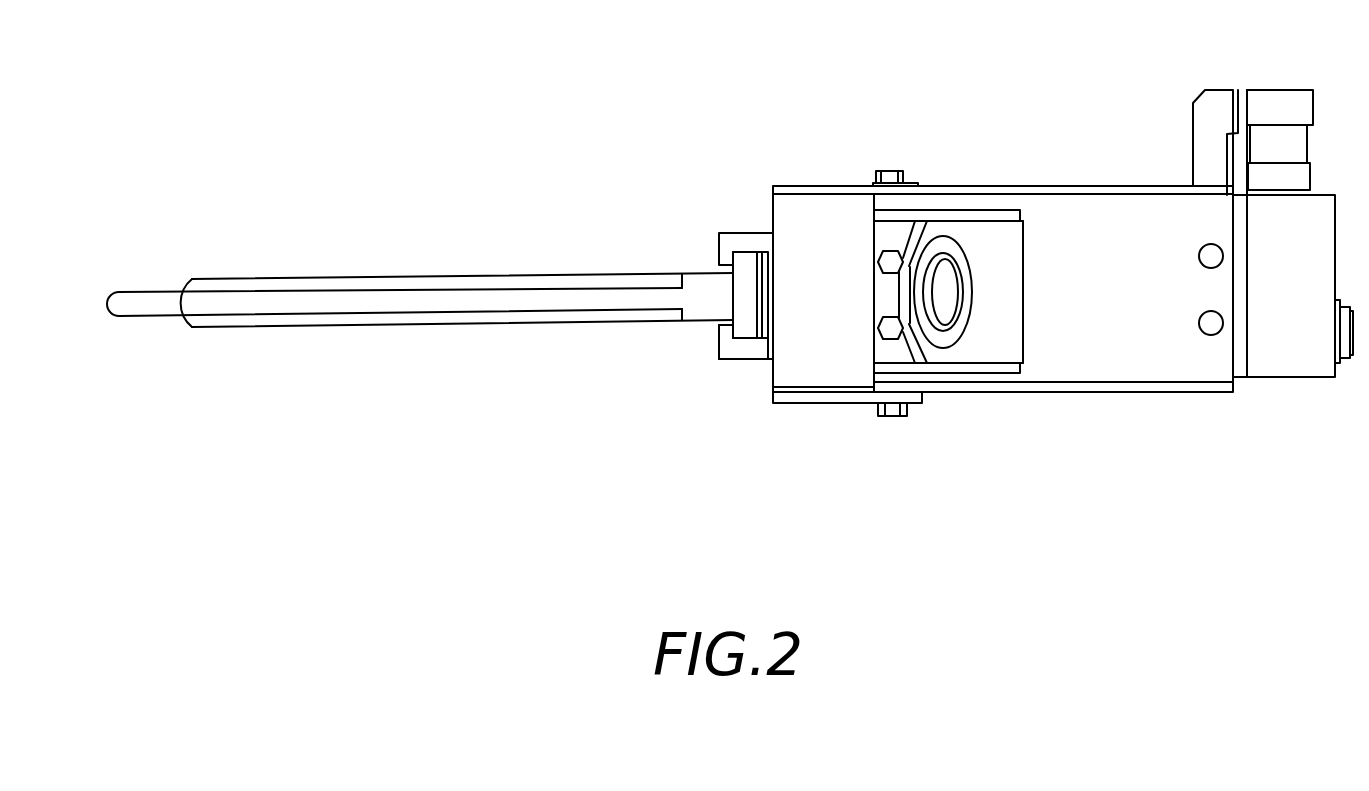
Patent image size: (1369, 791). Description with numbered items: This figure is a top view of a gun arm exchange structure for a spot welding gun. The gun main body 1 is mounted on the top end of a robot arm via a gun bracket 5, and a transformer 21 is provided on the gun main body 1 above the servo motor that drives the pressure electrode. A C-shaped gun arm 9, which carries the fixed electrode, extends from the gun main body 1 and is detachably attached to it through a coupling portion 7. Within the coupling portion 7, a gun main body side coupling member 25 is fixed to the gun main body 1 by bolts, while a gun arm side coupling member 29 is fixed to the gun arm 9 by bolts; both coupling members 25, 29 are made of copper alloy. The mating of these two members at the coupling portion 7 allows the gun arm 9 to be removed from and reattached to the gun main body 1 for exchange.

The gun main body 1 is at (1110, 187).
The gun bracket 5 is at (987, 350).
The coupling portion 7 is at (733, 231).
The gun arm 9 is at (502, 276).
The transformer 21 is at (1117, 363).
The gun main body side coupling member 25 is at (750, 350).
The gun arm side coupling member 29 is at (731, 343).